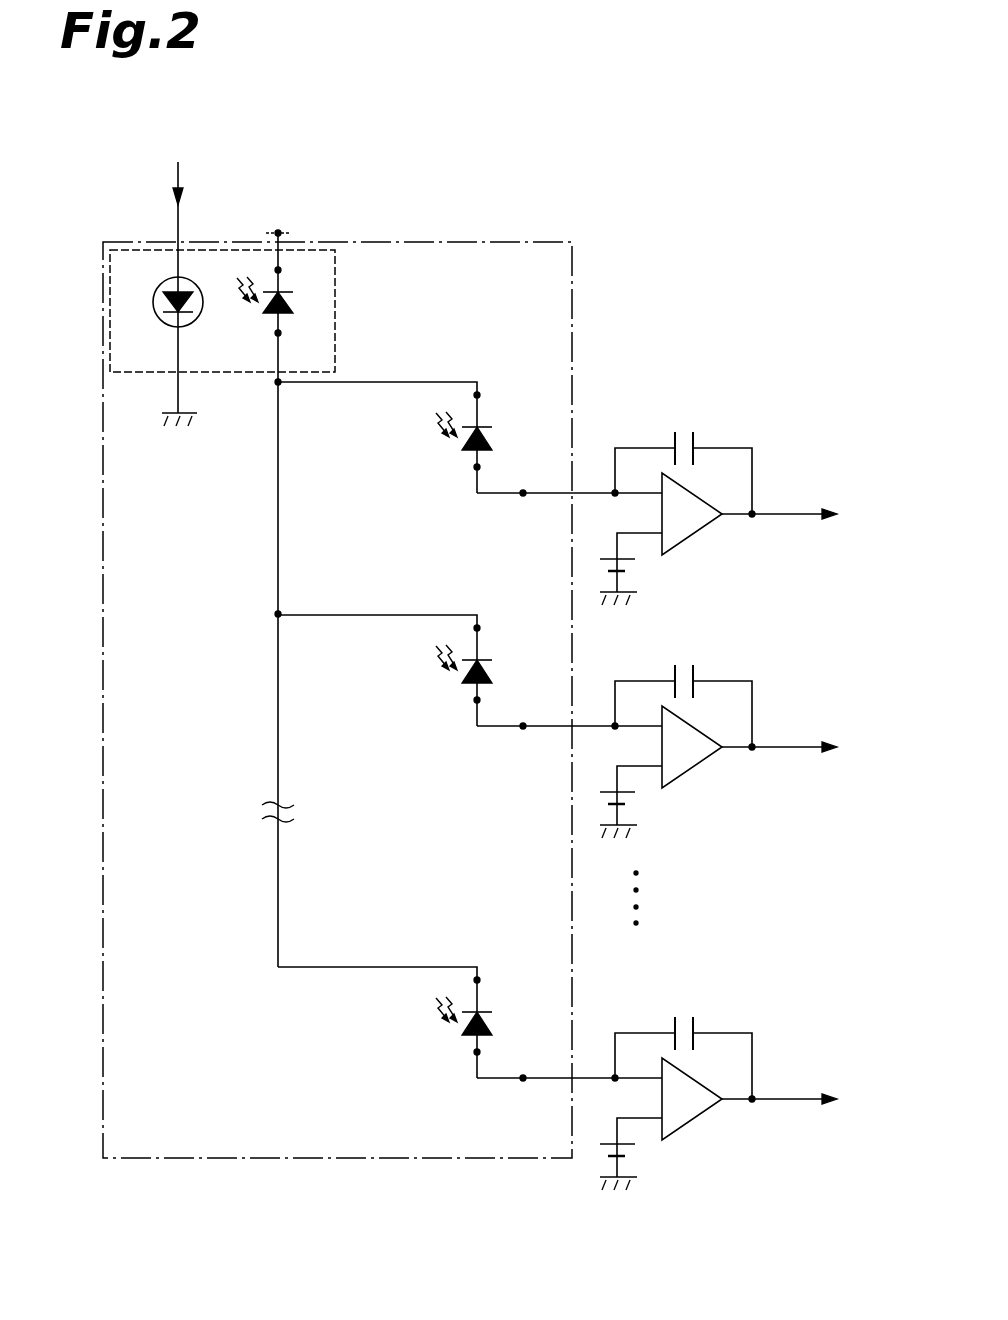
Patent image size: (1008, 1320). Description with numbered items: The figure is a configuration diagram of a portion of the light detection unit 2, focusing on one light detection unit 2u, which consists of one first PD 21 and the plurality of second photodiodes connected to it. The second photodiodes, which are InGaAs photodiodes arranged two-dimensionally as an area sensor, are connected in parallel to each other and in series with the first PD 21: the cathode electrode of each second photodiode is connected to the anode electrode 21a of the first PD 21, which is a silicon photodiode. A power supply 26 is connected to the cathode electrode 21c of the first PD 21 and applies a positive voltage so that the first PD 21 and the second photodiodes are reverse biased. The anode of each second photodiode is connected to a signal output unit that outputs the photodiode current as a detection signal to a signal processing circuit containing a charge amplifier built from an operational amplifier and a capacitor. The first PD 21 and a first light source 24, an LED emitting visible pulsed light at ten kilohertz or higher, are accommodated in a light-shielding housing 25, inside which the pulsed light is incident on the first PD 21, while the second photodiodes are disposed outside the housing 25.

The light detection unit 2 is at (706, 164).
The light detection unit 2u is at (573, 338).
The first PD 21 is at (270, 318).
The anode electrode 21a is at (282, 333).
The cathode electrode 21c is at (282, 270).
The first light source 24 is at (160, 318).
The housing 25 is at (125, 248).
The power supply 26 is at (275, 232).